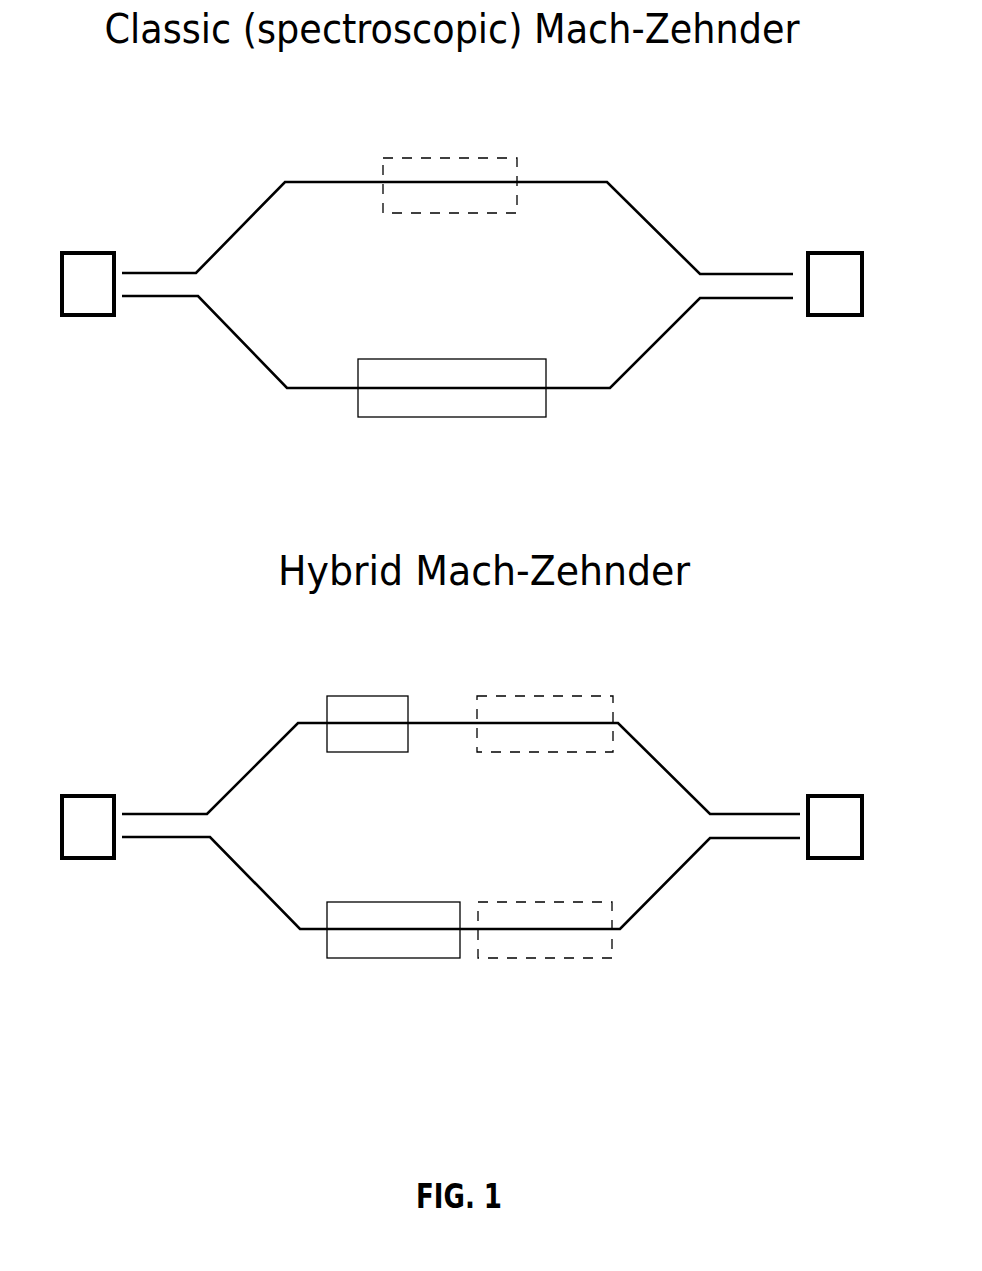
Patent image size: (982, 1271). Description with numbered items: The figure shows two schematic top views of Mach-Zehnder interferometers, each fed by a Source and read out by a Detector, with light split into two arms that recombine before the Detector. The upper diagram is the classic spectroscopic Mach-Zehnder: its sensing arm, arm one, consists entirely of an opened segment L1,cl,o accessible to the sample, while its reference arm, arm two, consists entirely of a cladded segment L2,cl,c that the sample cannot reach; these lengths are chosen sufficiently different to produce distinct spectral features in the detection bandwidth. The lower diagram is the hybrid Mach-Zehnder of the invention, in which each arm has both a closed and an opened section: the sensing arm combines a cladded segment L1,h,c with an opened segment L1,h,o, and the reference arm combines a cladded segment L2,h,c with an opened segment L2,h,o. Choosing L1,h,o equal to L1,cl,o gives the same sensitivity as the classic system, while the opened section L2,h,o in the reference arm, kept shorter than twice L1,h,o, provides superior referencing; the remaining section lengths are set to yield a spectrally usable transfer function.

The light source Source is at (90, 253).
The detector Detector is at (833, 253).
The opened segment of the sensing arm of the classic Mach-Zehnder L1,cl,o is at (383, 146).
The closed segment of the reference arm of the classic Mach-Zehnder L2,cl,c is at (358, 429).
The closed segment of the sensing arm of the hybrid Mach-Zehnder L1,h,c is at (327, 683).
The opened segment of the sensing arm of the hybrid Mach-Zehnder L1,h,o is at (477, 683).
The closed segment of the reference arm of the hybrid Mach-Zehnder L2,h,c is at (327, 970).
The opened segment of the reference arm of the hybrid Mach-Zehnder L2,h,o is at (478, 970).